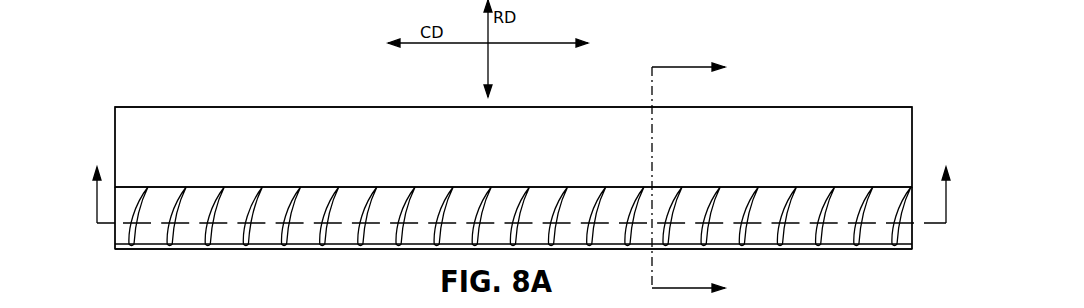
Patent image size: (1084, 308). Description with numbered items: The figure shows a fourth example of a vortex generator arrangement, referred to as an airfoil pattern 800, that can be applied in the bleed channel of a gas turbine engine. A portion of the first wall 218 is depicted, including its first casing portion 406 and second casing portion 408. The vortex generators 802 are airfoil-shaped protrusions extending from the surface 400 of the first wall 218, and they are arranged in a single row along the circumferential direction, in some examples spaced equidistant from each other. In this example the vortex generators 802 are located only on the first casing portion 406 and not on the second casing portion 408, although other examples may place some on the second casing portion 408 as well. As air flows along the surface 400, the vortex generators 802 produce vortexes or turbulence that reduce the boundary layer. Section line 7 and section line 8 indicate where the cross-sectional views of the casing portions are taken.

The first wall 218 is at (360, 132).
The surface 400 is at (300, 233).
The first casing portion 406 is at (125, 232).
The second casing portion 408 is at (272, 128).
The airfoil pattern 800 is at (218, 168).
The vortex generators 802 is at (244, 240).
The section line 7- 7 is at (520, 185).
The section line 8- 8 is at (699, 181).